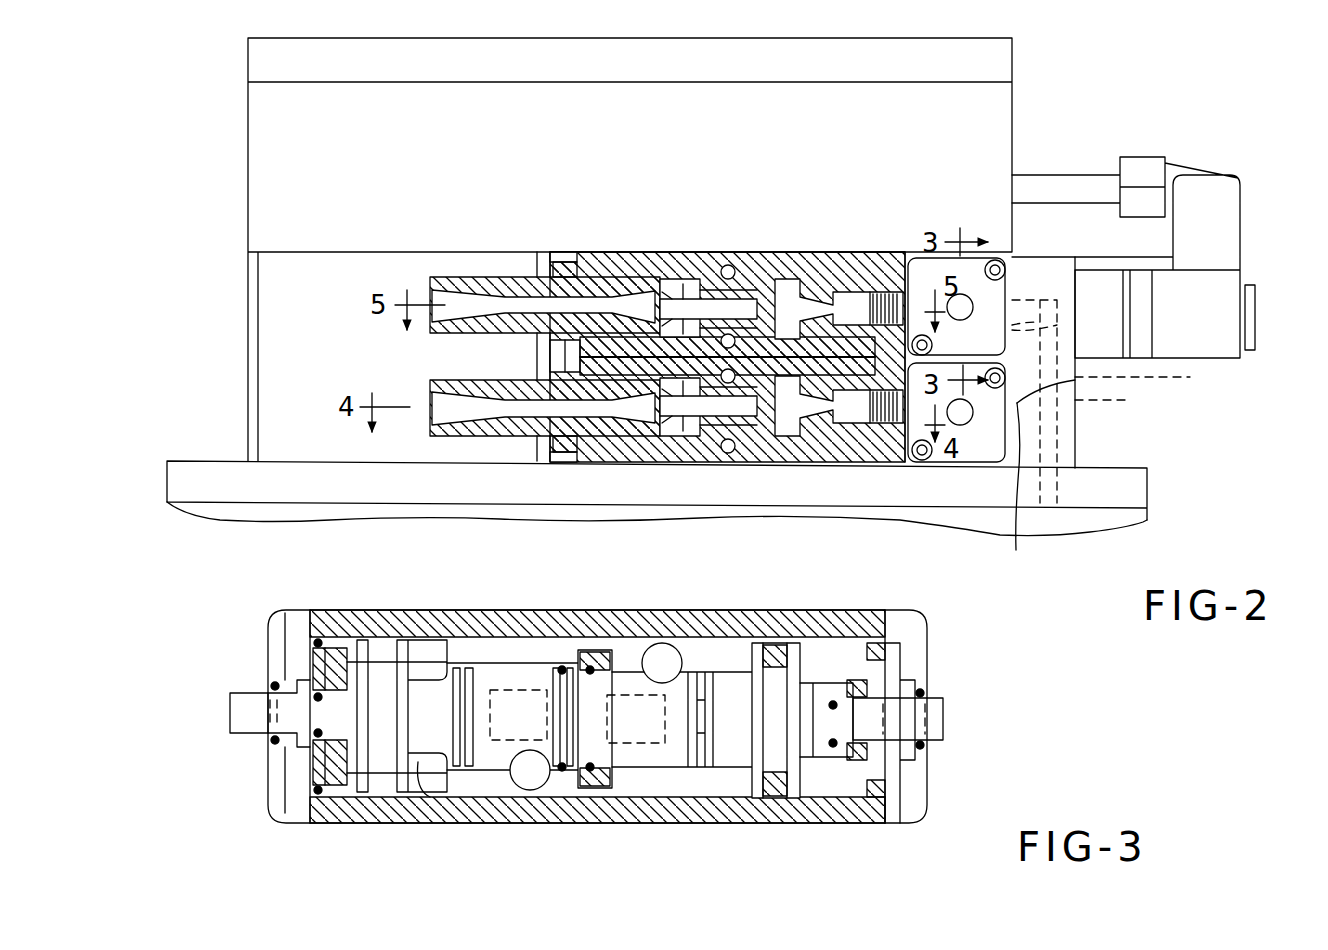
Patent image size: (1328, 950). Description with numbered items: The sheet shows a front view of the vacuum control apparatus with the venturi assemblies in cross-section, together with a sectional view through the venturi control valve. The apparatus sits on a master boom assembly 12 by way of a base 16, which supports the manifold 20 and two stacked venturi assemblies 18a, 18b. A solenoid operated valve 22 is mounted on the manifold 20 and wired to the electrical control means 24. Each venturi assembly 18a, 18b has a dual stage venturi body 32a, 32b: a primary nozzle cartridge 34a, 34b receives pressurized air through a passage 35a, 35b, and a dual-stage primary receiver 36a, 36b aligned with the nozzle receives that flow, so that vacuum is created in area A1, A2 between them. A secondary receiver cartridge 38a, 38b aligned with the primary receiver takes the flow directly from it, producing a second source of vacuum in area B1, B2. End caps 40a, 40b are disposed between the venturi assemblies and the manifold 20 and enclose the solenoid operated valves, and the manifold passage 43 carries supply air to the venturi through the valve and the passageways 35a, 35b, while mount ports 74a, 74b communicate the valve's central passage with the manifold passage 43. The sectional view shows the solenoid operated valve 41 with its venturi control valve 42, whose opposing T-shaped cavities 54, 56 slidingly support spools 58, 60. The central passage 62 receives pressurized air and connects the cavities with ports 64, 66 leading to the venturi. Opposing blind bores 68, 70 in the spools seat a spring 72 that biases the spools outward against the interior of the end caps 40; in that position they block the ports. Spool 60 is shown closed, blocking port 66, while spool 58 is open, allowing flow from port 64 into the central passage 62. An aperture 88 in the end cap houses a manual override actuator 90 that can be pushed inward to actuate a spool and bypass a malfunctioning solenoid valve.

In FIG. 2, the master boom assembly 12 is at (1092, 530).
In FIG. 2, the base 16 is at (1150, 494).
In FIG. 2, the venturi assembly 18a is at (460, 438).
In FIG. 2, the venturi assembly 18b is at (465, 275).
In FIG. 2, the manifold 20 is at (1078, 449).
In FIG. 2, the solenoid operated valve 22 is at (1243, 247).
In FIG. 2, the electrical control means 24 is at (998, 40).
In FIG. 2, the dual stage venturi body 32a is at (757, 463).
In FIG. 2, the dual stage venturi body 32b is at (722, 252).
In FIG. 2, the primary nozzle cartridge 34a is at (857, 463).
In FIG. 2, the primary nozzle cartridge 34b is at (860, 252).
In FIG. 2, the passage 35a is at (1153, 381).
In FIG. 2, the passage 35b is at (1060, 325).
In FIG. 2, the dual-stage primary receiver 36a is at (676, 463).
In FIG. 2, the dual-stage primary receiver 36b is at (677, 252).
In FIG. 2, the secondary receiver cartridge 38a is at (593, 463).
In FIG. 2, the secondary receiver cartridge 38b is at (583, 262).
In FIG. 3, the end cap 40 is at (270, 800).
In FIG. 2, the end cap 40a is at (975, 465).
In FIG. 2, the end cap 40b is at (915, 258).
In FIG. 3, the solenoid operated valve 41 is at (342, 612).
In FIG. 3, the venturi control valve 42 is at (862, 823).
In FIG. 2, the manifold passage 43 is at (1089, 397).
In FIG. 3, the T-shaped cavity 54 is at (822, 795).
In FIG. 3, the T-shaped cavity 56 is at (427, 790).
In FIG. 3, the spool 58 is at (813, 658).
In FIG. 3, the spool 60 is at (418, 678).
In FIG. 3, the central passage 62 is at (628, 690).
In FIG. 3, the port 64 is at (673, 645).
In FIG. 3, the port 66 is at (533, 792).
In FIG. 3, the blind bore 68 is at (632, 660).
In FIG. 3, the blind bore 70 is at (500, 690).
In FIG. 3, the spring 72 is at (650, 743).
In FIG. 2, the mount port 74a is at (1018, 553).
In FIG. 2, the mount port 74b is at (1022, 300).
In FIG. 3, the aperture 88 is at (282, 724).
In FIG. 3, the manual override actuator 90 is at (230, 711).
In FIG. 2, the vacuum area A1 is at (784, 463).
In FIG. 2, the vacuum area A2 is at (781, 252).
In FIG. 2, the vacuum area B1 is at (668, 463).
In FIG. 2, the vacuum area B2 is at (645, 252).